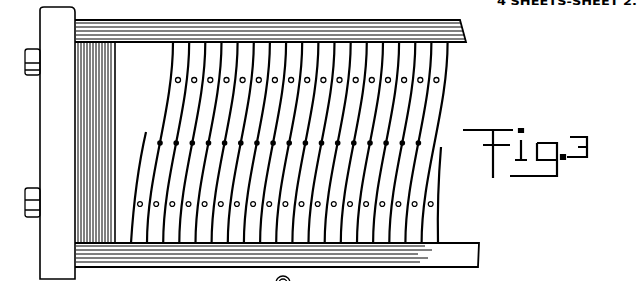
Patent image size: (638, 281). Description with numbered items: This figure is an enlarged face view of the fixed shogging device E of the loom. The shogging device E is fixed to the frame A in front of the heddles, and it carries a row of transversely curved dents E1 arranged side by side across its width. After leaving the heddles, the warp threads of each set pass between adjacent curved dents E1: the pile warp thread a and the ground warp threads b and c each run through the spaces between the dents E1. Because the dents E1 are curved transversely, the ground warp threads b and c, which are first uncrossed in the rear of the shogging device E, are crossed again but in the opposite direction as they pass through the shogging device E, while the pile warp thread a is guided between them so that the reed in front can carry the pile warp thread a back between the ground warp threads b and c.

The frame A is at (47, 126).
The shogging device E is at (198, 30).
The transversely curved dents E1 is at (166, 121).
The pile warp thread a is at (157, 144).
The ground warp thread b is at (175, 81).
The ground warp thread c is at (137, 204).